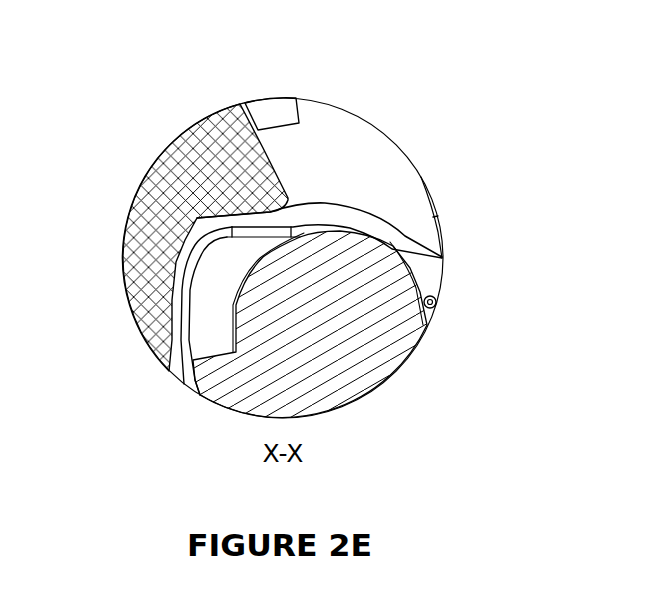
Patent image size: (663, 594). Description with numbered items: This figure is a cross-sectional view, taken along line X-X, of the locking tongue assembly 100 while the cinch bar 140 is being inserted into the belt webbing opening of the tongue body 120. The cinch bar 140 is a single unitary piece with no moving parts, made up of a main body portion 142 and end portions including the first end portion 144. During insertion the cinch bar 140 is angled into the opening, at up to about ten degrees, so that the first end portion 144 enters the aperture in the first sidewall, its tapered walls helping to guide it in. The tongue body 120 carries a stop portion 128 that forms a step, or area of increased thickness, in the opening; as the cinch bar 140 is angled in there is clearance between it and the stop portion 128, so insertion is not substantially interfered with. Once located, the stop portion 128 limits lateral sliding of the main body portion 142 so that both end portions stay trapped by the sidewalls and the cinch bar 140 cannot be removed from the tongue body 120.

The tongue assembly 100 is at (434, 123).
The tongue body 120 is at (148, 245).
The stop portion 128 is at (238, 212).
The cinch bar 140 is at (353, 348).
The main body portion 142 is at (427, 268).
The first end portion 144 is at (310, 287).